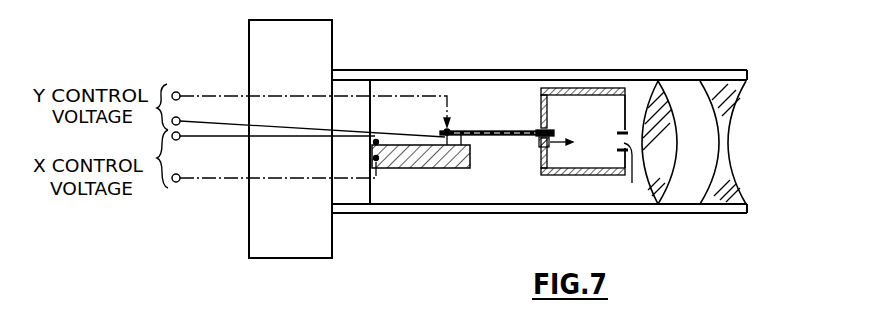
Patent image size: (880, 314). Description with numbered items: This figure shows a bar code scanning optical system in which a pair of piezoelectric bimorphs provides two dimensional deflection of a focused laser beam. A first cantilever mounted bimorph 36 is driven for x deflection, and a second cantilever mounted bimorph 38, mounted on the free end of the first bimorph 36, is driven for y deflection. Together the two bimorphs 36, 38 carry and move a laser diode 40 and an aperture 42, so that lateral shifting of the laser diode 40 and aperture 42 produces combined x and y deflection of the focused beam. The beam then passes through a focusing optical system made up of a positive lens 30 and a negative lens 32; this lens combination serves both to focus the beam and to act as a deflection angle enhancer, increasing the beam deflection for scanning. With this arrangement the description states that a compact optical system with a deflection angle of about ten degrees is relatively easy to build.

The positive lens 30 is at (672, 110).
The negative lens 32 is at (733, 112).
The first cantilever mounted bimorph 36 is at (433, 168).
The second cantilever mounted bimorph 38 is at (511, 128).
The laser diode 40 is at (540, 151).
The aperture 42 is at (632, 183).